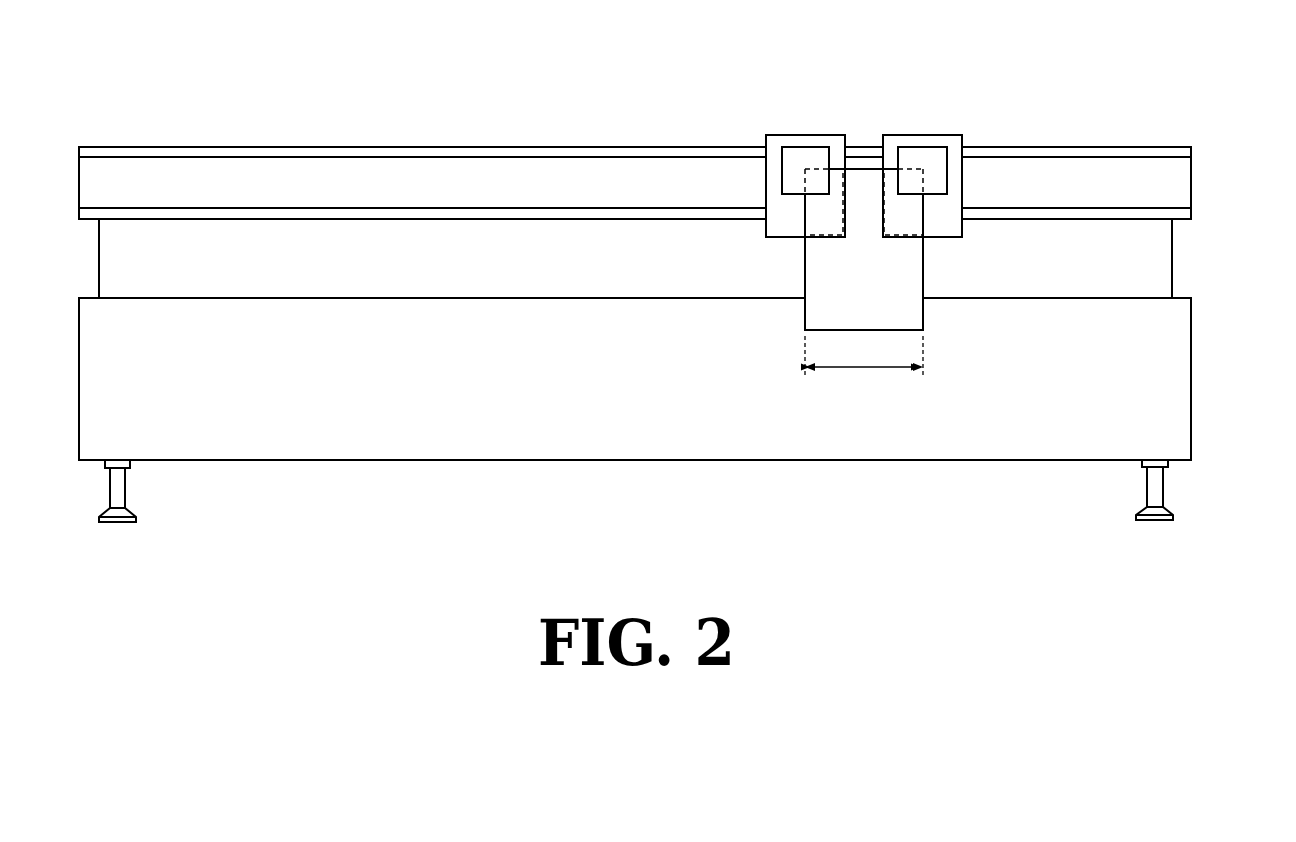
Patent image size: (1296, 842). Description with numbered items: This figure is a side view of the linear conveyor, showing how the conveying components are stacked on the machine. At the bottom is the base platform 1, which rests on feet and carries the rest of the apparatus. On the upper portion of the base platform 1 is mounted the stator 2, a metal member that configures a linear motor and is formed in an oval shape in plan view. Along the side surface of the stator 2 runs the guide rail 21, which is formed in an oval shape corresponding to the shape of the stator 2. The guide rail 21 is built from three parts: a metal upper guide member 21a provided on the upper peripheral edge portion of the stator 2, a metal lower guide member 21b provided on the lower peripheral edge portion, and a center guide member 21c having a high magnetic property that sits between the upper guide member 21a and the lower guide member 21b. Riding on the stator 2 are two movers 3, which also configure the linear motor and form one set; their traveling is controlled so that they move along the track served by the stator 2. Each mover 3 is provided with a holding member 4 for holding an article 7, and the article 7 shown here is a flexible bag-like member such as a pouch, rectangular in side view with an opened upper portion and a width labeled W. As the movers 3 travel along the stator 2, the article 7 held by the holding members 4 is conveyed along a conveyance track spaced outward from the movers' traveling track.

The base platform 1 is at (1191, 373).
The stator 2 is at (1034, 145).
The guide rail 21 is at (1108, 170).
The upper guide member 21a is at (1170, 144).
The lower guide member 21b is at (1180, 222).
The center guide member 21c is at (1191, 177).
The mover 3 is at (784, 132).
The holding member 4 is at (813, 147).
The article 7 is at (923, 277).